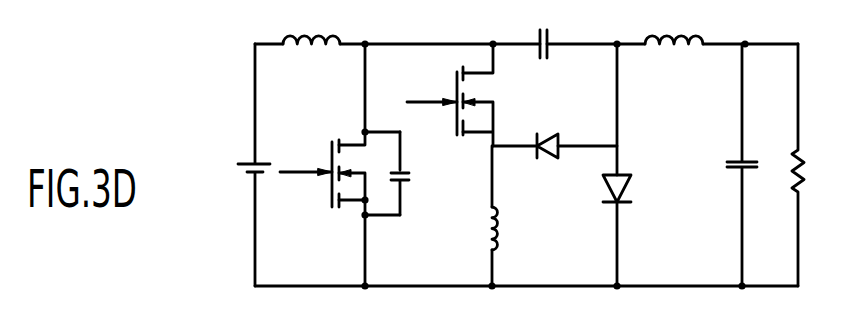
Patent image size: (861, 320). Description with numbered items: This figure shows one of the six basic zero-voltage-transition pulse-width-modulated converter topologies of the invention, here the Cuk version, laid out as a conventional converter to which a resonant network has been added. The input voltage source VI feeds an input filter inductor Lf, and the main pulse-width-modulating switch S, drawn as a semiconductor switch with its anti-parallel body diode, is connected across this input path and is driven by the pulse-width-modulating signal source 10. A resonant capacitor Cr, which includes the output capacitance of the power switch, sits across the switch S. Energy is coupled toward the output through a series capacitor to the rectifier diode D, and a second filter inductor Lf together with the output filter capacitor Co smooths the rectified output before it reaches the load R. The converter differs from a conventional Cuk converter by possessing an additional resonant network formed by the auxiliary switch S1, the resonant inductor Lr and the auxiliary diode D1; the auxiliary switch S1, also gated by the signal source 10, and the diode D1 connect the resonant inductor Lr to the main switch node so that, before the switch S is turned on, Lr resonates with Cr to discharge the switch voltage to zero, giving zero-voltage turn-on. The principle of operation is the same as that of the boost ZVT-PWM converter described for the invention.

The pulse-width-modulating signal source 10 is at (386, 132).
The pulse-width-modulating switch S is at (332, 200).
The auxiliary switch S1 is at (457, 132).
The filter inductor Lf is at (493, 26).
The resonant inductor Lr is at (513, 216).
The resonant capacitor Cr is at (411, 173).
The filter capacitor Co is at (728, 165).
The rectifier diode D is at (626, 196).
The auxiliary diode D1 is at (550, 131).
The load R is at (809, 165).
The voltage source VI is at (238, 165).